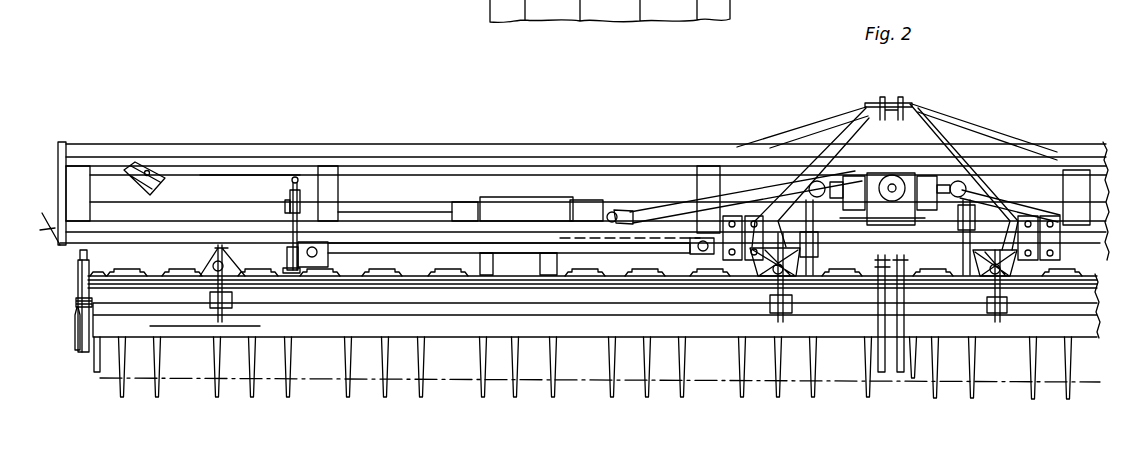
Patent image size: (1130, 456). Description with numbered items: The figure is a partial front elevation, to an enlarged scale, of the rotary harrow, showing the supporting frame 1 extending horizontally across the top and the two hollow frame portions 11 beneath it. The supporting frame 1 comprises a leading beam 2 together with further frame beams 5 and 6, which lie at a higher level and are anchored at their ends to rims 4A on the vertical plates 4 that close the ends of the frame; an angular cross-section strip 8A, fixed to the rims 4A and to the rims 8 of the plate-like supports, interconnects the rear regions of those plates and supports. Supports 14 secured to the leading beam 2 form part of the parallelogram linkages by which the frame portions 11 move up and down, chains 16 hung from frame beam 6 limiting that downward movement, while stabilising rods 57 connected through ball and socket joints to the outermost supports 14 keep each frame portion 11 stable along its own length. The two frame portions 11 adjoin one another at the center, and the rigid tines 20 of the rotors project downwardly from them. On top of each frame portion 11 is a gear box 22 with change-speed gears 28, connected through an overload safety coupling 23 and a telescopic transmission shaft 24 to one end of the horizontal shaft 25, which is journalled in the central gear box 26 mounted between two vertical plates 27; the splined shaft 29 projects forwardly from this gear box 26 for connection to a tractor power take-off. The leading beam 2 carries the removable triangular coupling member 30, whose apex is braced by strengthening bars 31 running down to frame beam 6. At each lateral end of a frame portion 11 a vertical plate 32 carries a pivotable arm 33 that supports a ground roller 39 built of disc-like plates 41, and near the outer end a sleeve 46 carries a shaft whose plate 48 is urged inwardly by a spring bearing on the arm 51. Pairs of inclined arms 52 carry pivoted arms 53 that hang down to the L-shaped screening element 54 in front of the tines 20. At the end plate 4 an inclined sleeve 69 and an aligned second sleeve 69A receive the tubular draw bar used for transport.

The supporting frame 1 is at (332, 134).
The leading frame beam 2 is at (78, 242).
The vertical plate 4 is at (60, 141).
The rim 4A is at (72, 179).
The further frame beam 5 is at (415, 150).
The further frame beam 6 is at (472, 170).
The rim 8 is at (338, 196).
The angular cross-section strip 8A is at (233, 180).
The hollow frame portion 11 is at (617, 298).
The support 14 is at (286, 248).
The chain 16 is at (290, 193).
The rigid tine 20 is at (546, 396).
The gear box 22 is at (530, 195).
The overload safety coupling 23 is at (587, 197).
The telescopic transmission shaft 24 is at (656, 210).
The horizontal shaft 25 is at (850, 176).
The gear box 26 is at (912, 175).
The vertical plate 27 is at (868, 217).
The change-speed gear 28 is at (455, 199).
The horizontal shaft 29 is at (893, 182).
The coupling member 30 is at (880, 108).
The strengthening bar 31 is at (828, 123).
The vertical plate 32 is at (880, 289).
The arm 33 is at (884, 374).
The rotatable supporting member 39 is at (409, 387).
The disc-like plate 41 is at (94, 366).
The vertical sleeve 46 is at (78, 282).
The plate 48 is at (76, 338).
The arm 51 is at (75, 310).
The arm 52 is at (204, 250).
The arm 53 is at (220, 320).
The screening element 54 is at (186, 328).
The stabilising rod 57 is at (505, 230).
The sleeve 69 is at (42, 213).
The second sleeve 69A is at (155, 167).